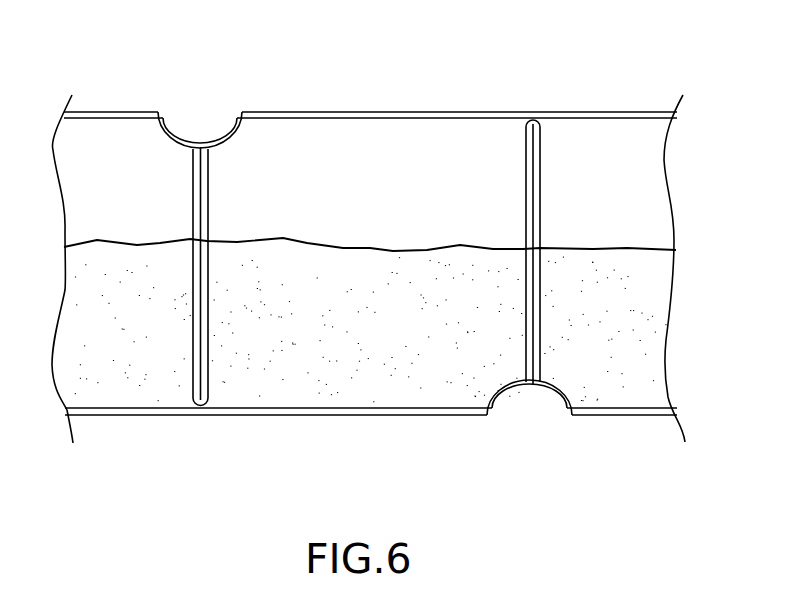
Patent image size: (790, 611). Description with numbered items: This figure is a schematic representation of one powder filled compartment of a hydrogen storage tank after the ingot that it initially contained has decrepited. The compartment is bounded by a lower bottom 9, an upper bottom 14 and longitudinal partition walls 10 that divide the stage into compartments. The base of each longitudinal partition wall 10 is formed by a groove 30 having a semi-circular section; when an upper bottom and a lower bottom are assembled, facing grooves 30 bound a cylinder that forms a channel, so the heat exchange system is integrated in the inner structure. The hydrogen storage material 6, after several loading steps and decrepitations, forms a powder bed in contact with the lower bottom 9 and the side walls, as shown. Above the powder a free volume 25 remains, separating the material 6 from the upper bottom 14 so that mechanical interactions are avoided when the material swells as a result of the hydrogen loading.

The hydrogen storage material 6 is at (372, 372).
The lower bottom 9 is at (217, 408).
The longitudinal partition walls 10 is at (532, 148).
The upper bottom 14 is at (392, 117).
The free volume 25 is at (321, 145).
The groove 30 is at (202, 130).